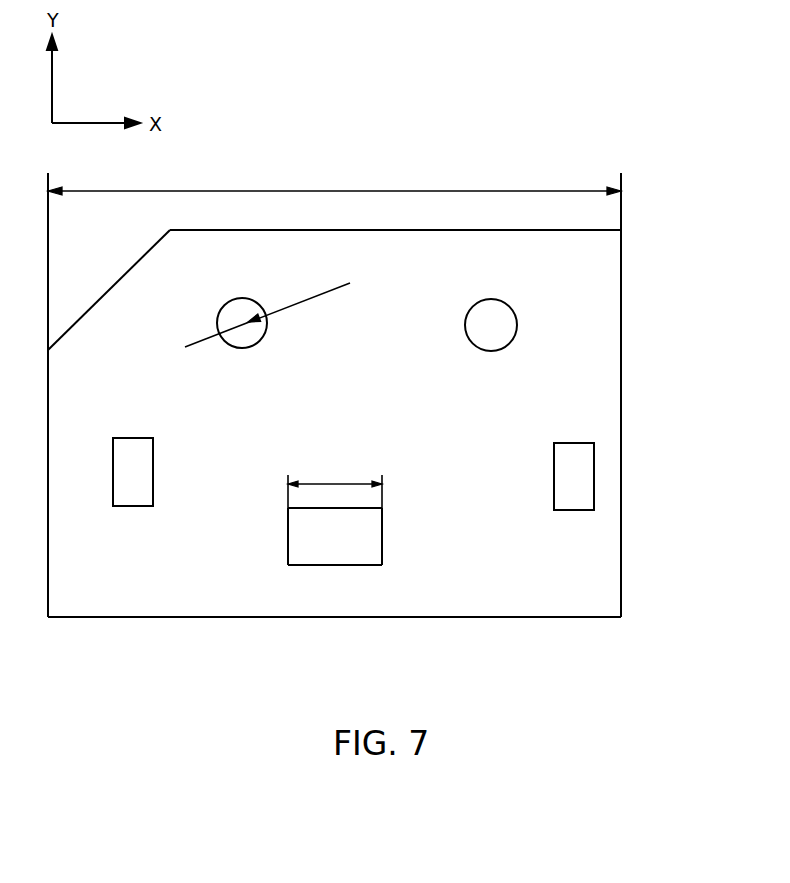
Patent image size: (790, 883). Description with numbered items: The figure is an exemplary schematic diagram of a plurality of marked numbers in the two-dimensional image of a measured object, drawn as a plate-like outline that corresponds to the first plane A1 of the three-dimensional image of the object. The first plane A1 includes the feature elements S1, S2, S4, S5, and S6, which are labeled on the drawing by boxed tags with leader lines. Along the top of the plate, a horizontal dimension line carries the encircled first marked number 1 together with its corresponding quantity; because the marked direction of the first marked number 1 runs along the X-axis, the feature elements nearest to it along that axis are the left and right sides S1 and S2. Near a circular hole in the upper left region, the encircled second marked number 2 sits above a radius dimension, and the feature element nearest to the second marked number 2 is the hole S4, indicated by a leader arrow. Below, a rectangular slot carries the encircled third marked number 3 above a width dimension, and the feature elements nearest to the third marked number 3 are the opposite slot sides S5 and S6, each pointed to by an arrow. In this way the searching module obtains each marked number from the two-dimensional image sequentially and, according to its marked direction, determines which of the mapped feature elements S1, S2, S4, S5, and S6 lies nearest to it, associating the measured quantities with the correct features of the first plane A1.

The first plane A1 is at (561, 320).
The first marked number 1 is at (334, 155).
The second marked number 2 is at (267, 291).
The third marked number 3 is at (335, 464).
The feature element S1 is at (49, 483).
The feature element S2 is at (621, 423).
The feature element S4 is at (215, 325).
The feature element S5 is at (280, 530).
The feature element S6 is at (388, 528).